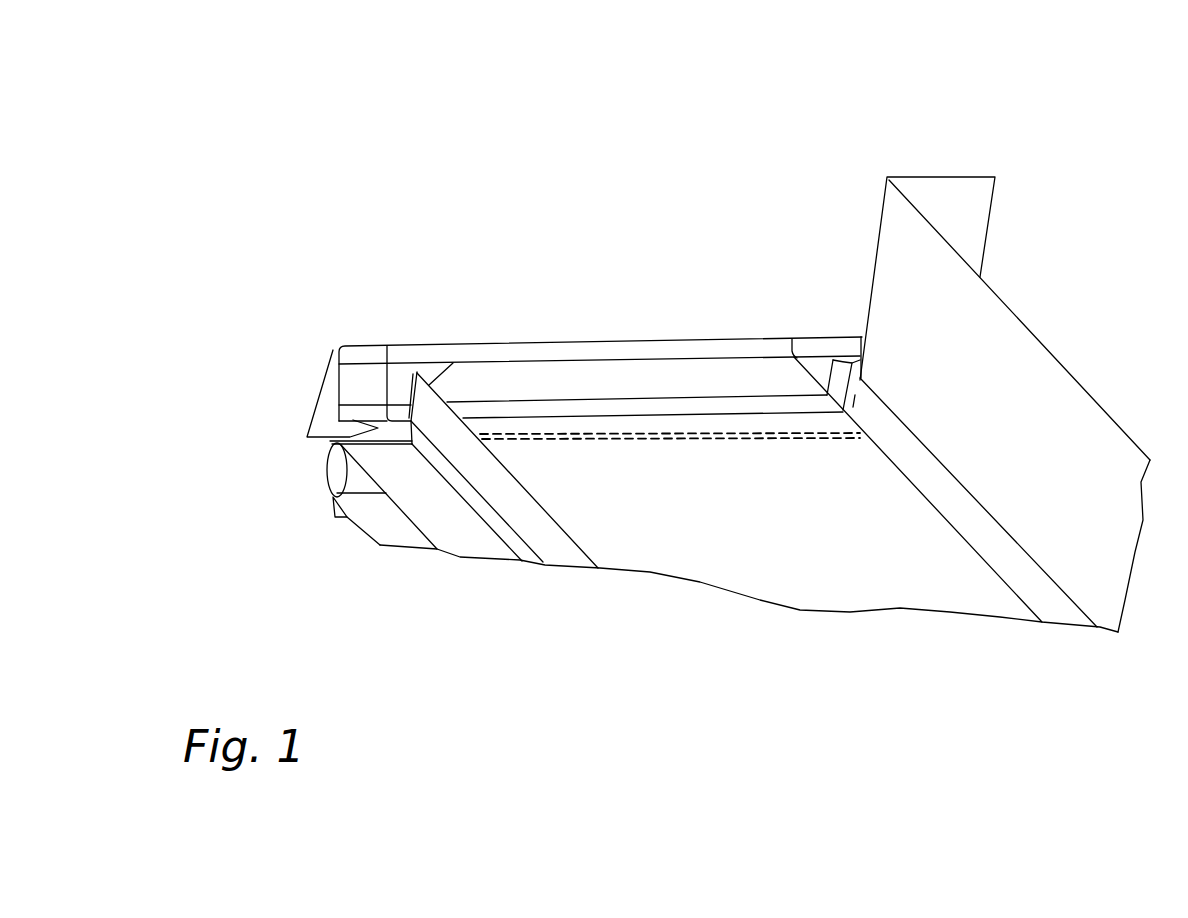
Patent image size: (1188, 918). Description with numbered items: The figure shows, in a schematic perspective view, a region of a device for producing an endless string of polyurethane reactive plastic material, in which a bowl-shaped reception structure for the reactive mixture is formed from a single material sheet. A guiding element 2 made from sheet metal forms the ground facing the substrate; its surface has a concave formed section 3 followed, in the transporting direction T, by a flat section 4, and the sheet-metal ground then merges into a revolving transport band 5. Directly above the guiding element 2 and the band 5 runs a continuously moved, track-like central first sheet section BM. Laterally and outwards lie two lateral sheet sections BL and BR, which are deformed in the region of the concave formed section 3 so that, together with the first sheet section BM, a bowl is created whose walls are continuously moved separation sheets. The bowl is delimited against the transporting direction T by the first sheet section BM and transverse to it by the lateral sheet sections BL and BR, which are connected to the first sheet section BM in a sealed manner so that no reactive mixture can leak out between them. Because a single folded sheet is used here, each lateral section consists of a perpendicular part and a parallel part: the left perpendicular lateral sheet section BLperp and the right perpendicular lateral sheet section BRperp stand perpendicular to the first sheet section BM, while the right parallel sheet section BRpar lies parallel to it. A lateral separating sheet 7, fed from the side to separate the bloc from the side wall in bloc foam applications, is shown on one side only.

The guiding element 2 is at (353, 354).
The concave formed section 3 is at (366, 402).
The flat section 4 is at (377, 427).
The revolving transport band 5 is at (405, 483).
The lateral separating sheet 7 is at (965, 197).
The right lateral sheet section BR is at (408, 355).
The central first sheet section BM is at (572, 350).
The left lateral sheet section BL is at (815, 347).
The right perpendicular lateral sheet section BRperp is at (522, 512).
The right parallel sheet section BRpar is at (490, 493).
The left perpendicular lateral sheet section BLperp is at (1035, 577).
The transporting direction T is at (880, 683).